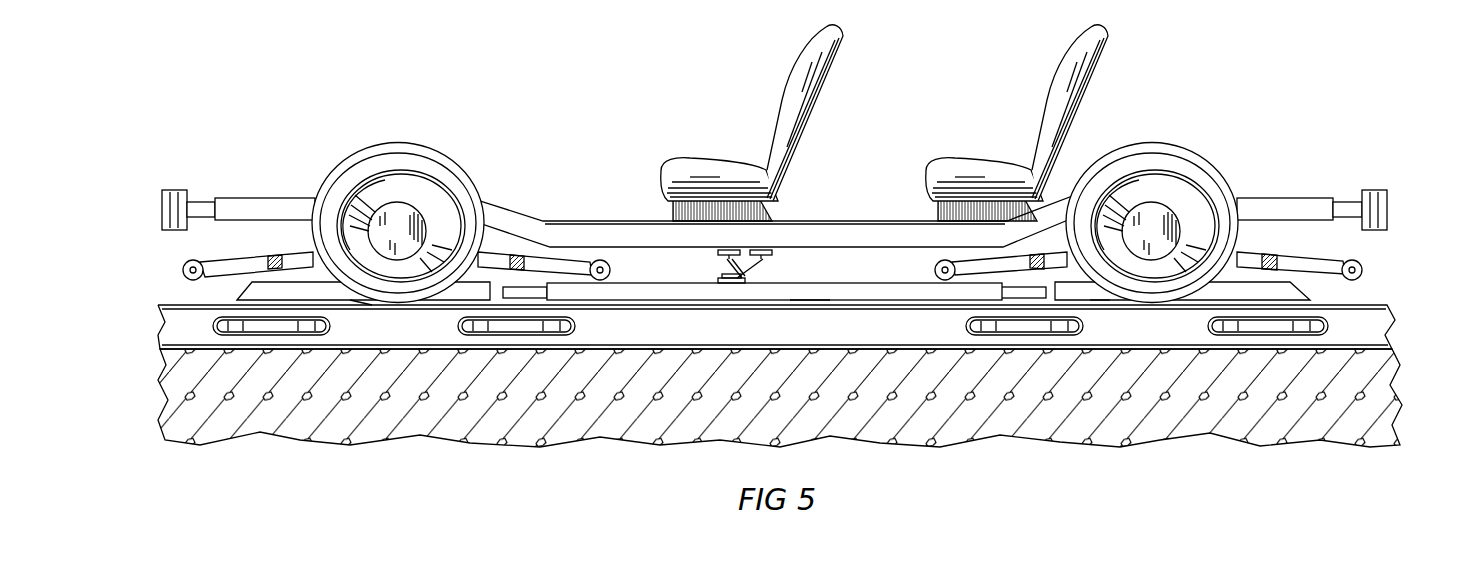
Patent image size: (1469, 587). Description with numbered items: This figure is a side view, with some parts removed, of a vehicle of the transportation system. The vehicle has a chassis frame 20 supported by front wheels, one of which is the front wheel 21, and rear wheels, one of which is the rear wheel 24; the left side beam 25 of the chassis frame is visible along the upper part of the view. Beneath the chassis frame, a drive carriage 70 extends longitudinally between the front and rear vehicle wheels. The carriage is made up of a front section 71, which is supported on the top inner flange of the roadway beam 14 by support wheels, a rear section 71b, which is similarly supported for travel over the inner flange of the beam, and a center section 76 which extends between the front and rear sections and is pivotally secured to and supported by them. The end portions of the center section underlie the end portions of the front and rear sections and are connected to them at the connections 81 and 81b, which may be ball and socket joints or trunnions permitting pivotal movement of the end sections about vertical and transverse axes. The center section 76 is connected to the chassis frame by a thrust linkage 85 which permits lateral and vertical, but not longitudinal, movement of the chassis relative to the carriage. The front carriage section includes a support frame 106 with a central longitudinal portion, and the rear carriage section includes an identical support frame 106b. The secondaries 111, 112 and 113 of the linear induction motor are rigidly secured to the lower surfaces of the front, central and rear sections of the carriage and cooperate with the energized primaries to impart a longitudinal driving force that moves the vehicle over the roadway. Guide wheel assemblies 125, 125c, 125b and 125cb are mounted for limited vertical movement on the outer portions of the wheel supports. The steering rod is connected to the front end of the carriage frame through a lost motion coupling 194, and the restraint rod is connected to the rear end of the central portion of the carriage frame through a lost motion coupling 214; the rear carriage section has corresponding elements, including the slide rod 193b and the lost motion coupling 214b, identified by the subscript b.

The beam 14 is at (700, 345).
The chassis frame 20 is at (779, 136).
The front wheel 21 is at (393, 140).
The rear wheel 24 is at (1148, 140).
The left side beam 25 is at (608, 220).
The drive carriage 70 is at (783, 257).
The front section 71 is at (240, 290).
The rear section 71b is at (1312, 290).
The center section 76 is at (900, 298).
The connection 81 is at (539, 292).
The connection 81b is at (1054, 292).
The thrust linkage 85 is at (760, 265).
The support frame 106 is at (490, 245).
The support frame 106b is at (1247, 250).
The secondary 111 is at (355, 308).
The secondary 112 is at (810, 303).
The secondary 113 is at (1102, 305).
The guide wheel assembly 125 is at (238, 338).
The guide wheel assembly 125c is at (550, 338).
The guide wheel assembly 125b is at (1000, 338).
The guide wheel assembly 125cb is at (1305, 338).
The slide rod 193b is at (932, 268).
The lost motion coupling 194 is at (183, 262).
The lost motion coupling 214 is at (612, 268).
The lost motion coupling 214b is at (1367, 260).